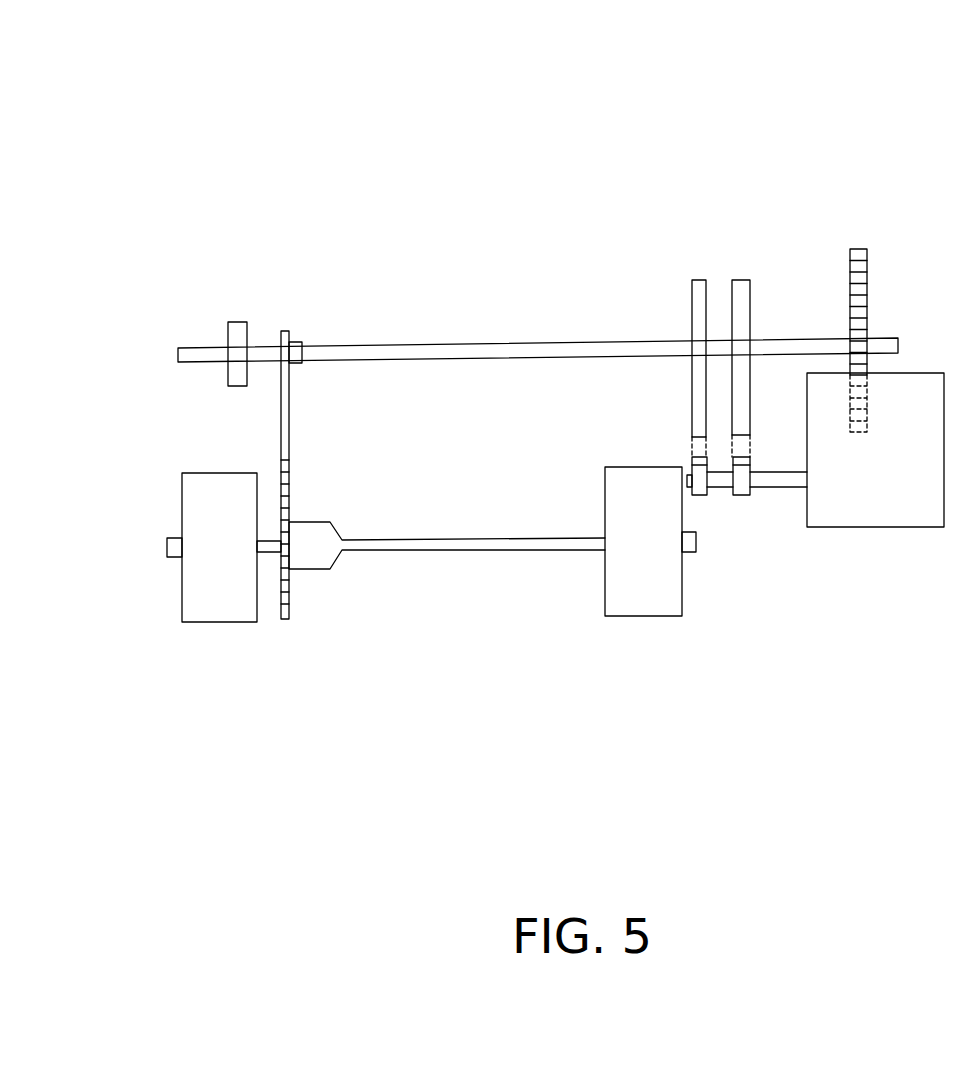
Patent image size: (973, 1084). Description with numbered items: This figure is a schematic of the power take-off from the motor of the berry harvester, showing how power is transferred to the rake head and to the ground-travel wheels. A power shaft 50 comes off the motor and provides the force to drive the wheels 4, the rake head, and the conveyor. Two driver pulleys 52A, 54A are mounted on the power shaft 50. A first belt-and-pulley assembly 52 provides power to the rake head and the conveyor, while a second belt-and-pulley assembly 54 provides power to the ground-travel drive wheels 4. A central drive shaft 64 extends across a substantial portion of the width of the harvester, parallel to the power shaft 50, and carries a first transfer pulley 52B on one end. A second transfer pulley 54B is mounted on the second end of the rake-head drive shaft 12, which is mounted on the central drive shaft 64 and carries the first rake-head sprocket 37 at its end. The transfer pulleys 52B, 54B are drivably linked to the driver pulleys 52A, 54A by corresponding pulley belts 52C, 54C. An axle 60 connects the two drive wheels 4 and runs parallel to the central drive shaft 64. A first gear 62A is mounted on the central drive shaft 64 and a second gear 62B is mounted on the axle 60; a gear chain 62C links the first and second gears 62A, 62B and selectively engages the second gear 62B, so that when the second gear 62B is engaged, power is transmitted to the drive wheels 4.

The ground-travel drive wheels 4 is at (195, 583).
The rake-head drive shaft 12 is at (820, 347).
The first rake-head sprocket 37 is at (860, 280).
The power shaft 50 is at (780, 478).
The first belt-and-pulley assembly 52 is at (738, 325).
The driver pulley 52A is at (748, 478).
The first transfer pulley 52B is at (743, 282).
The pulley belt 52C is at (755, 443).
The second belt-and-pulley assembly 54 is at (709, 292).
The driver pulley 54A is at (700, 483).
The second transfer pulley 54B is at (693, 293).
The pulley belt 54C is at (695, 450).
The axle 60 is at (442, 545).
The first gear 62A is at (300, 343).
The second gear 62B is at (288, 592).
The gear chain 62C is at (278, 410).
The central drive shaft 64 is at (443, 350).